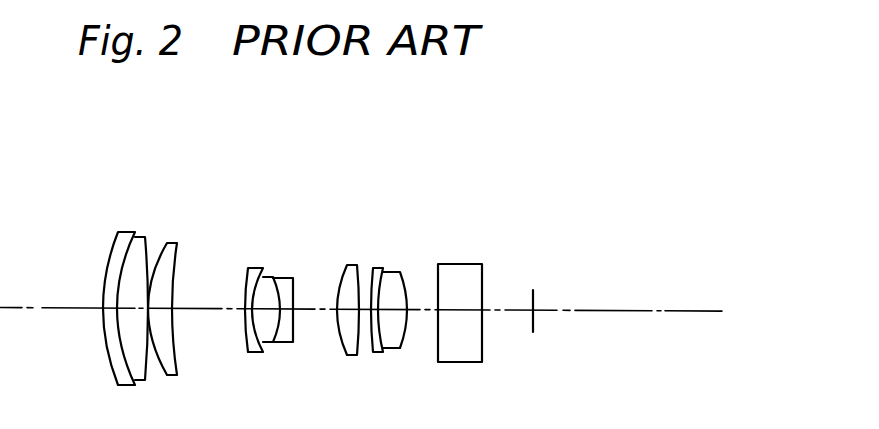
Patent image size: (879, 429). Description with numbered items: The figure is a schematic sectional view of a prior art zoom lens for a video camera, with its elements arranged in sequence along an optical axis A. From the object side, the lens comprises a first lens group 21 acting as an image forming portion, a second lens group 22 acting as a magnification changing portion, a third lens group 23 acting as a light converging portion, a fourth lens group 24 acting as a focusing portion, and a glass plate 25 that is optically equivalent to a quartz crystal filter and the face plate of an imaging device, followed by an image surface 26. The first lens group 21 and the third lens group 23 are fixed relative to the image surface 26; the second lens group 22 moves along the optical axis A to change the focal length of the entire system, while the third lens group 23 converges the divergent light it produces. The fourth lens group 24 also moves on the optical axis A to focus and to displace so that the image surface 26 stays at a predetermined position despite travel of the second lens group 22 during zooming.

The first lens group 21 is at (192, 218).
The second lens group 22 is at (310, 252).
The third lens group 23 is at (368, 252).
The fourth lens group 24 is at (415, 252).
The glass plate 25 is at (482, 252).
The image surface 26 is at (533, 288).
The optical axis A is at (683, 310).